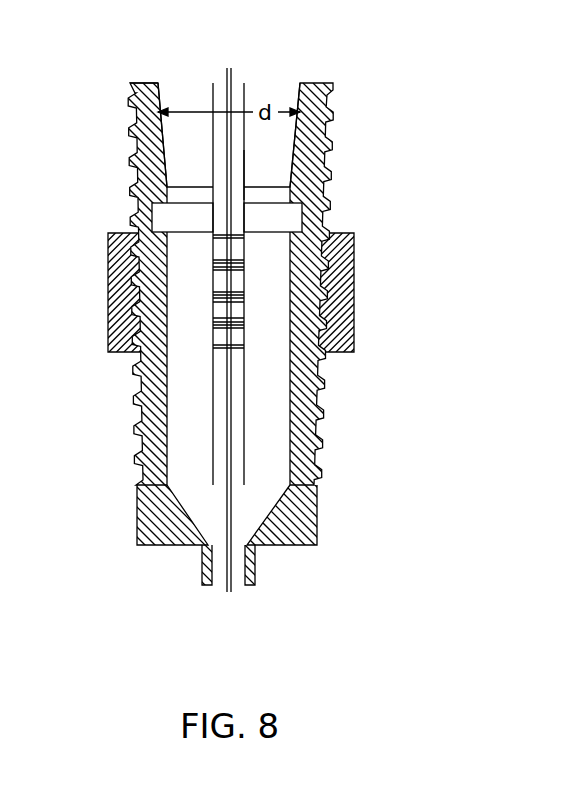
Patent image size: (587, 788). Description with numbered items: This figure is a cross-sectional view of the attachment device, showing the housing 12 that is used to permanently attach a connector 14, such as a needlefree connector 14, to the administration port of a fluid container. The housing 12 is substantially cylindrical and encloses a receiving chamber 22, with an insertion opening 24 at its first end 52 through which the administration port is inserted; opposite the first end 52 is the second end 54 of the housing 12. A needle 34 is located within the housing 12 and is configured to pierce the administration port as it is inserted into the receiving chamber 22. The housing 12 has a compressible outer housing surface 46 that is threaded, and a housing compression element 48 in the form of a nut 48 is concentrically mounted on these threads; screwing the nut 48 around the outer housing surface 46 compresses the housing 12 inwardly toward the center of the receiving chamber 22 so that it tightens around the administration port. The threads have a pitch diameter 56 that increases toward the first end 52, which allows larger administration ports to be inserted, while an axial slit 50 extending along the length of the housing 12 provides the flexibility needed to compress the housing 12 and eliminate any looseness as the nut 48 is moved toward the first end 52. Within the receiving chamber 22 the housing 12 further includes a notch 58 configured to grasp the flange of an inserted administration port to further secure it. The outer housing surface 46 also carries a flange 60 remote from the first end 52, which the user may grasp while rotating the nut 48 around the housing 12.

The housing 12 is at (325, 110).
The connector 14 is at (202, 573).
The receiving chamber 22 is at (173, 97).
The insertion opening 24 is at (200, 83).
The needle 34 is at (230, 77).
The compressible outer housing surface 46 is at (133, 143).
The housing compression element 48 is at (355, 280).
The axial slit 50 is at (237, 170).
The first end 52 is at (130, 83).
The second end 54 is at (140, 457).
The pitch diameter 56 is at (263, 100).
The notch 58 is at (313, 210).
The flange 60 is at (308, 502).